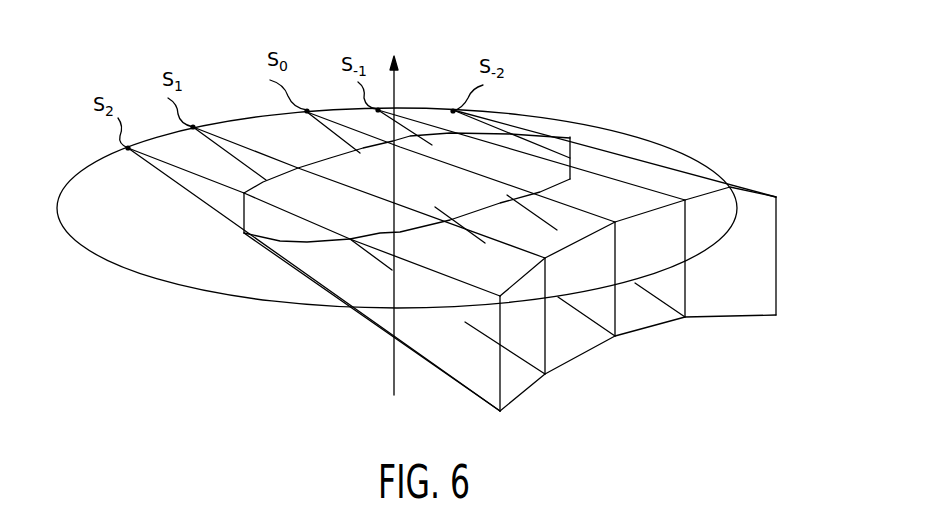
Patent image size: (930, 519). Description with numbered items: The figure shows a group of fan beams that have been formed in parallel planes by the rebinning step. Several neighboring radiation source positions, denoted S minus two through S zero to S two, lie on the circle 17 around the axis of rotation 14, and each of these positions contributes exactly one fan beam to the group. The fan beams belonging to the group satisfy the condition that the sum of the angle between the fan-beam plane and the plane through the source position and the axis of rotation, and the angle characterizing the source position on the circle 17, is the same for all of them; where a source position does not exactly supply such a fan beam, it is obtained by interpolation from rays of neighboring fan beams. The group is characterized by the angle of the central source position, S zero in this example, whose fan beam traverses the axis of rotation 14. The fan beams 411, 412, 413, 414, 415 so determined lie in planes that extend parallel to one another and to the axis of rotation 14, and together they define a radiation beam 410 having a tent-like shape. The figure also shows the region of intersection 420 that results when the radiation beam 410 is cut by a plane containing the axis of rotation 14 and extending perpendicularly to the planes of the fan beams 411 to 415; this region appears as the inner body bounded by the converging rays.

The axis of rotation 14 is at (397, 100).
The circle 17 is at (650, 139).
The radiation beam 410 is at (629, 264).
The fan beam 411 is at (502, 378).
The fan beam 412 is at (547, 347).
The fan beam 413 is at (622, 318).
The fan beam 414 is at (687, 317).
The fan beam 415 is at (778, 283).
The region of intersection 420 is at (520, 132).